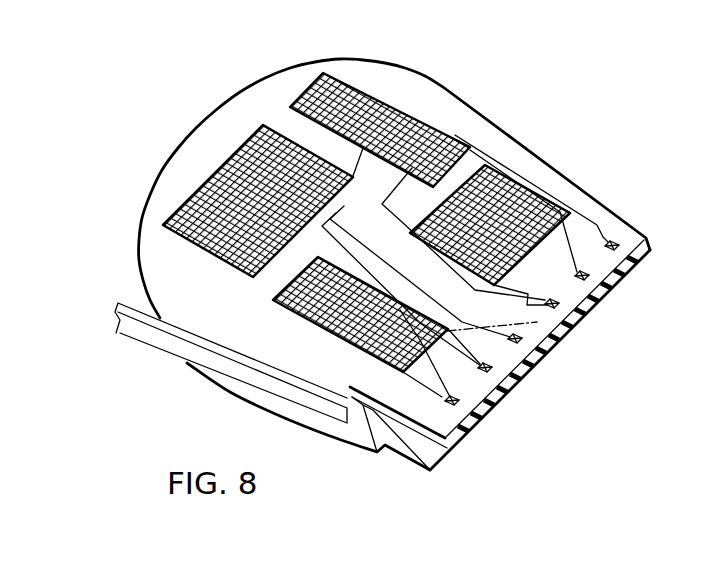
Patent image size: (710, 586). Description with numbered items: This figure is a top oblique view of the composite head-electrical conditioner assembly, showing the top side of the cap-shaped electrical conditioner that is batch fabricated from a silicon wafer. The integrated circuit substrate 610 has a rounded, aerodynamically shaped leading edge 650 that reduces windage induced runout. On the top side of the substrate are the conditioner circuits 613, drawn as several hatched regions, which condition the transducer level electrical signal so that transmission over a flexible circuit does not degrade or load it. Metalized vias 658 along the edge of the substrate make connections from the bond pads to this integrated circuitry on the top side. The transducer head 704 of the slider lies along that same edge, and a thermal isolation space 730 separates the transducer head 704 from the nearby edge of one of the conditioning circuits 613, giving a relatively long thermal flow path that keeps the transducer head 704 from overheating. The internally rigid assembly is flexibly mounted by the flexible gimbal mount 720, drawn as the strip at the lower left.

The leading edge 650 is at (178, 108).
The integrated circuit substrate 610 is at (455, 96).
The conditioner circuits 613 is at (358, 160).
The thermal isolation space 730 is at (517, 320).
The transducer head 704 is at (552, 347).
The metalized vias 658 is at (447, 405).
The flexible gimbal mount 720 is at (150, 345).